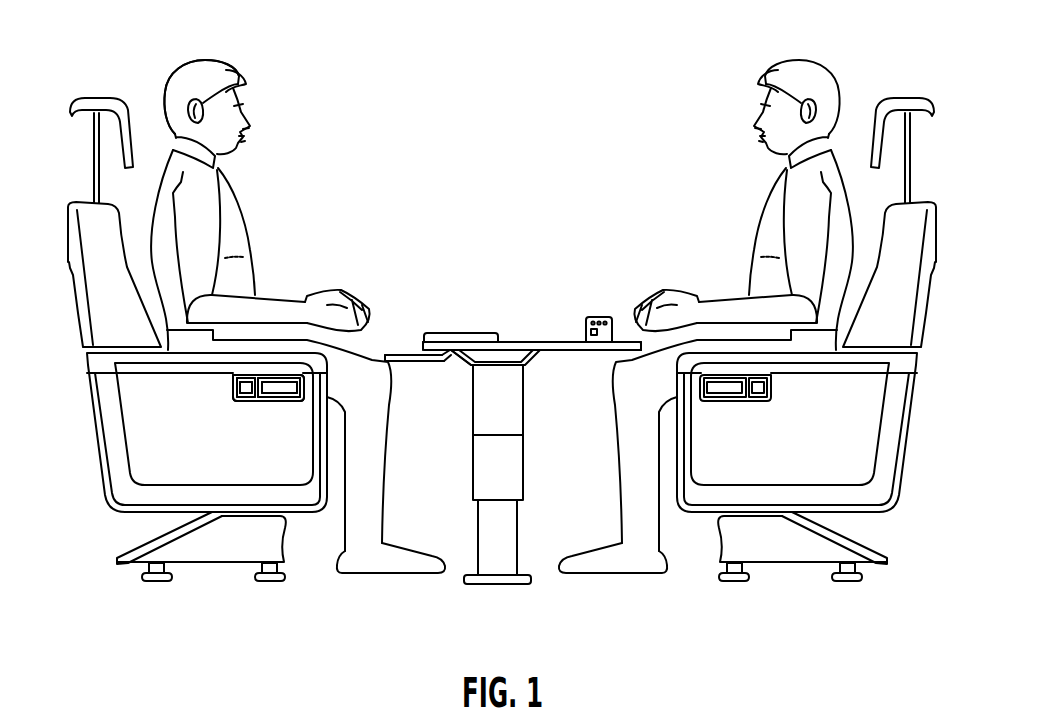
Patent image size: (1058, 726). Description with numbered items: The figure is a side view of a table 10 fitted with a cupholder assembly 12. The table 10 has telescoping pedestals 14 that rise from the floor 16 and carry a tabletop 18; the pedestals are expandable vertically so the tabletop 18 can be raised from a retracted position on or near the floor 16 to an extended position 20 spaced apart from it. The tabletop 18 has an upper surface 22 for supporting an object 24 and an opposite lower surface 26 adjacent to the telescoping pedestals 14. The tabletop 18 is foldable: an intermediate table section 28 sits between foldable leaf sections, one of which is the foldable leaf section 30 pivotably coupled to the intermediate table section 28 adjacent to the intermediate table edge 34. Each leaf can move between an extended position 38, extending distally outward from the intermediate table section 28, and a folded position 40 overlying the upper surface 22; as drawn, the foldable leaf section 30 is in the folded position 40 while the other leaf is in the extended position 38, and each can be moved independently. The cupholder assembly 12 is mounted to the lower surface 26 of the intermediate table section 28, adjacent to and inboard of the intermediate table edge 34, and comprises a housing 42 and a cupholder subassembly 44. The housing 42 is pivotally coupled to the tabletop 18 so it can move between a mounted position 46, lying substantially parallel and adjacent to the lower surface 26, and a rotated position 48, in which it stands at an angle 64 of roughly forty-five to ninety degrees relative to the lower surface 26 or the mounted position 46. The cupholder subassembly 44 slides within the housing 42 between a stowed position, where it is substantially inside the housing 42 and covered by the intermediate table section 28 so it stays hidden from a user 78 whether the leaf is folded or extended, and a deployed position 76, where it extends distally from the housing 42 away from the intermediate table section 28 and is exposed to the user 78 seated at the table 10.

The table 10 is at (449, 432).
The cupholder assembly 12 is at (455, 362).
The telescoping pedestals 14 is at (518, 556).
The floor 16 is at (531, 582).
The tabletop 18 is at (562, 351).
The extended position 20 is at (494, 294).
The upper surface 22 is at (575, 341).
The object 24 is at (607, 317).
The lower surface 26 is at (596, 351).
The intermediate table section 28 is at (516, 342).
The foldable leaf section 30 is at (440, 347).
The intermediate table edge 34 is at (412, 356).
The extended position 38 is at (647, 350).
The folded position 40 is at (488, 324).
The housing 42 is at (460, 363).
The cupholder subassembly 44 is at (392, 354).
The mounted position 46 is at (417, 386).
The rotated position 48 is at (437, 406).
The angle 64 is at (448, 358).
The deployed position 76 is at (386, 363).
The user 78 is at (212, 71).